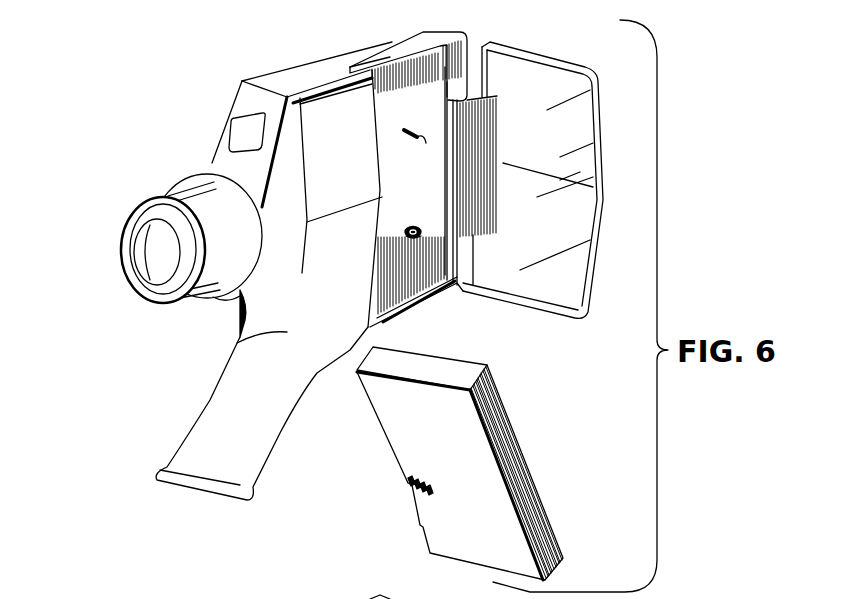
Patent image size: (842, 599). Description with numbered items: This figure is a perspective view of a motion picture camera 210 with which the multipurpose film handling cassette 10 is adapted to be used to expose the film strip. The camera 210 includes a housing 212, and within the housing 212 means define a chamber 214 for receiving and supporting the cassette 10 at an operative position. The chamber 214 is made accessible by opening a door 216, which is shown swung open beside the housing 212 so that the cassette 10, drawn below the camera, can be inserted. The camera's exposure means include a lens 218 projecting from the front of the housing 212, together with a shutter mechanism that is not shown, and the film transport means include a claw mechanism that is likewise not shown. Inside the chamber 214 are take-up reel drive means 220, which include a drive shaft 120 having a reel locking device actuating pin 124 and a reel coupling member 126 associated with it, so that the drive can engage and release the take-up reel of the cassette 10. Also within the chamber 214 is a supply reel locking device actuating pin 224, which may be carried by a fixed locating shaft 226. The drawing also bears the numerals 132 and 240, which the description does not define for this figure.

The multipurpose film handling cassette 10 is at (402, 427).
The drive shaft 120 is at (407, 231).
The reel locking device actuating pin 124 is at (423, 237).
The reel coupling member 126 is at (410, 226).
The washer 132 is at (427, 221).
The motion picture camera 210 is at (250, 54).
The housing 212 is at (410, 40).
The chamber 214 is at (428, 90).
The door 216 is at (601, 124).
The lens 218 is at (167, 248).
The take-up reel drive means 220 is at (401, 212).
The supply reel locking device actuating pin 224 is at (426, 143).
The fixed locating shaft 226 is at (405, 129).
The base 240 is at (428, 596).